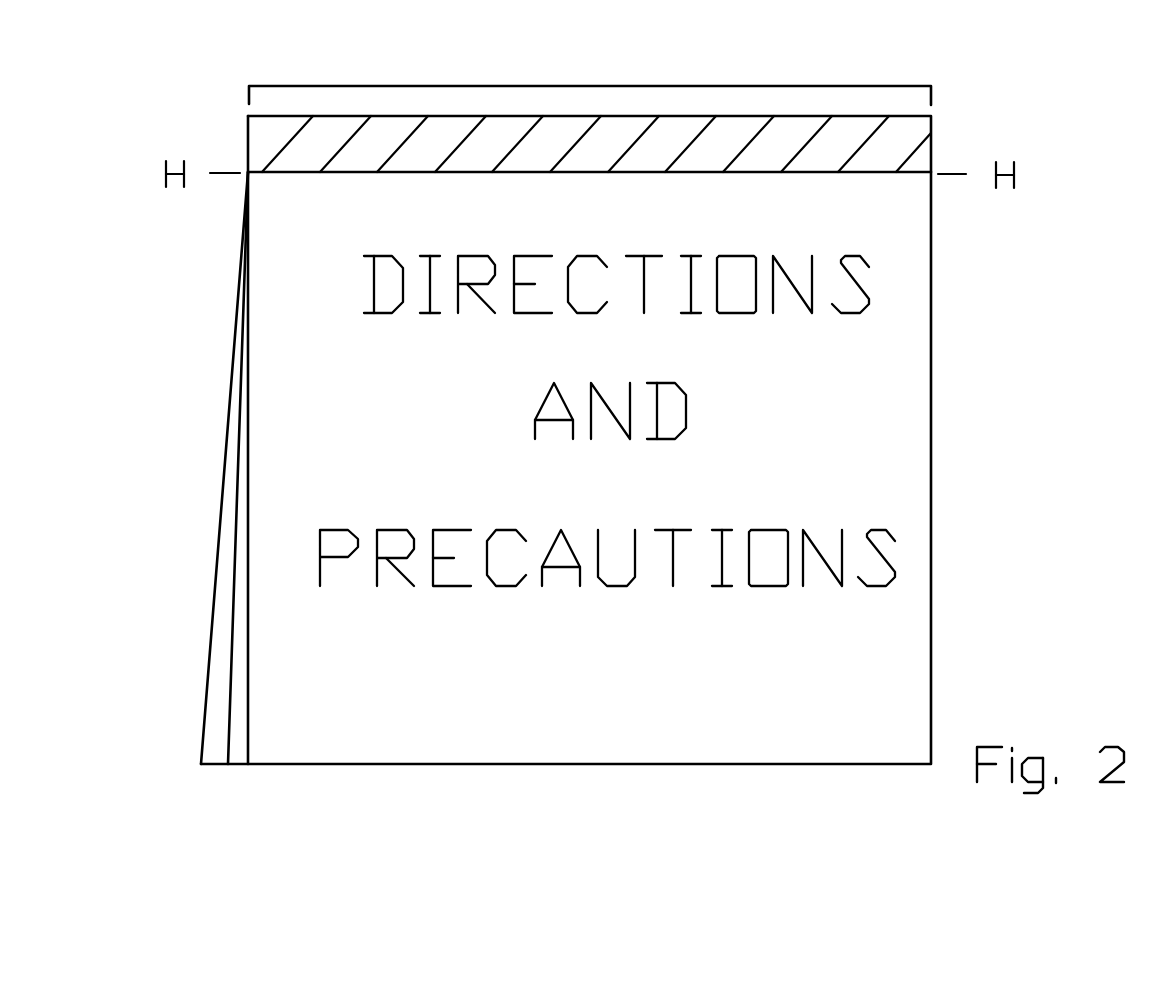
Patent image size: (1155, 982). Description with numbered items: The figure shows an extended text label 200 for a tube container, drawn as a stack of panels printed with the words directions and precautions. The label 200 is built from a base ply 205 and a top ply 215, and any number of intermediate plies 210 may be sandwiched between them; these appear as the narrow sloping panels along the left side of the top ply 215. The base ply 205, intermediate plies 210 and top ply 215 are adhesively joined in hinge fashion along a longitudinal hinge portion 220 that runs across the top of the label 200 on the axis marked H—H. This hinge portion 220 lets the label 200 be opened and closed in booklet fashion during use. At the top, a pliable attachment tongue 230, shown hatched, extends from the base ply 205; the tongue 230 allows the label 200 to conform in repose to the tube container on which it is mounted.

The extended text label 200 is at (595, 473).
The base ply 205 is at (217, 673).
The intermediate plies 210 is at (237, 733).
The top ply 215 is at (277, 734).
The longitudinal hinge portion 220 is at (590, 69).
The pliable attachment tongue 230 is at (898, 143).